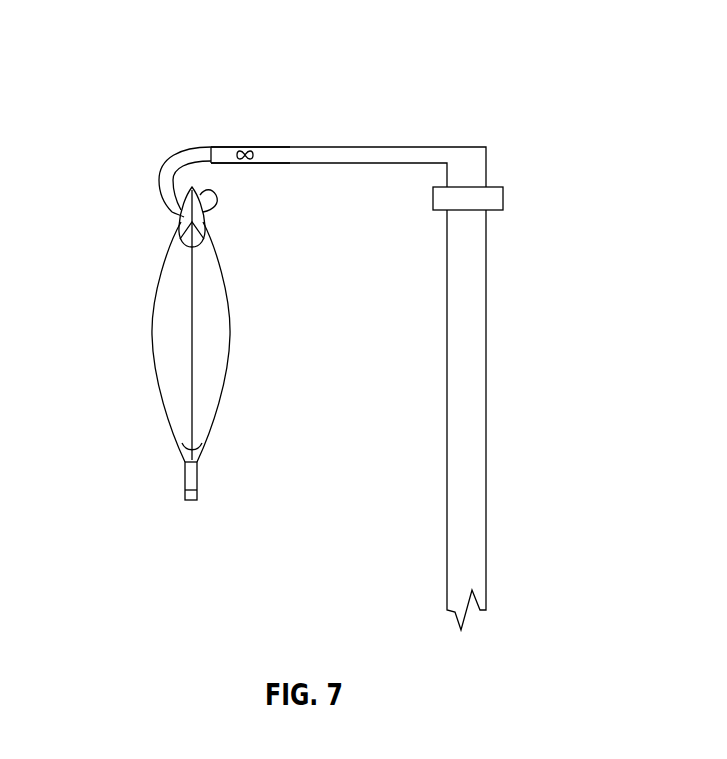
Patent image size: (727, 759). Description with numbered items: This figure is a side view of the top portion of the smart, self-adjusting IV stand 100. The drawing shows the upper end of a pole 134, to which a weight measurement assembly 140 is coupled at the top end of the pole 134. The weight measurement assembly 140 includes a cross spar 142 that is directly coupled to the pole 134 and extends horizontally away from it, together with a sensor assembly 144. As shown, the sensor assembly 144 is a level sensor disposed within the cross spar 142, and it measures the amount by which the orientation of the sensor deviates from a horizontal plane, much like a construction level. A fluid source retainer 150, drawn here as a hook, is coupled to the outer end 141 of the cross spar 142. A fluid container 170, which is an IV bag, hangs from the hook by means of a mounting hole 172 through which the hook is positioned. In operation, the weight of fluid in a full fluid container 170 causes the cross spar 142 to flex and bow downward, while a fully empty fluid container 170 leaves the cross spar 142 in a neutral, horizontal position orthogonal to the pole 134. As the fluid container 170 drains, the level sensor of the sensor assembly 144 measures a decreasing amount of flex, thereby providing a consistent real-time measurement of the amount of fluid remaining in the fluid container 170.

The self-adjusting IV stand 100 is at (512, 97).
The pole 134 is at (473, 413).
The weight measurement assembly 140 is at (358, 147).
The outer end 141 is at (218, 147).
The cross spar 142 is at (433, 156).
The sensor assembly 144 is at (246, 148).
The fluid source retainer 150 is at (178, 158).
The fluid container 170 is at (152, 338).
The mounting hole 172 is at (172, 212).